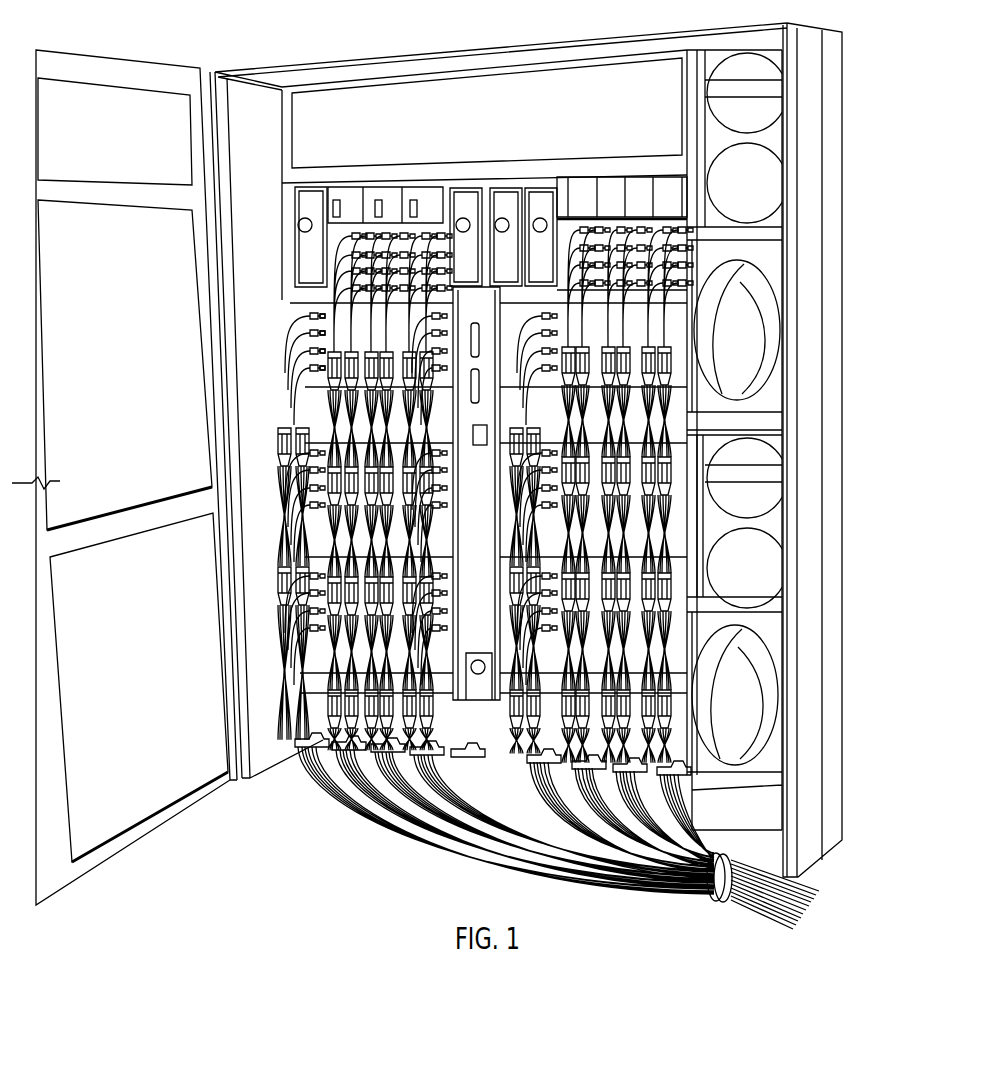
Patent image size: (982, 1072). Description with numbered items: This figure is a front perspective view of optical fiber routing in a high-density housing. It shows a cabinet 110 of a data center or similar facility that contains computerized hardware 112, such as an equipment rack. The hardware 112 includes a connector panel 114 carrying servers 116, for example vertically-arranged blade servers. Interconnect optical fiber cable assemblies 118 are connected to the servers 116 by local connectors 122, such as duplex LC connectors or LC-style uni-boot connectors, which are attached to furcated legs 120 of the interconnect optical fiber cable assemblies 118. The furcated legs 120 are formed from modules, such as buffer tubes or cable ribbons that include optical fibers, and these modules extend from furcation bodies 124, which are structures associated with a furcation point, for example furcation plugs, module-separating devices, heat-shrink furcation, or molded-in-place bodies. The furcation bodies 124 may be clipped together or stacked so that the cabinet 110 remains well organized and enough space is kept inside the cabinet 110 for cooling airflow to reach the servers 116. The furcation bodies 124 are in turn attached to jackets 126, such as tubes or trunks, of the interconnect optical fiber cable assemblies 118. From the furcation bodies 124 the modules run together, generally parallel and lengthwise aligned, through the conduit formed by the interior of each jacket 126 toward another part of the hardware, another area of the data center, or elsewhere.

The cabinet 110 is at (273, 836).
The computerized hardware 112 is at (430, 203).
The connector panel 114 is at (437, 245).
The servers 116 is at (623, 227).
The interconnect optical fiber cable assemblies 118 is at (283, 493).
The furcated legs 120 is at (292, 336).
The local connectors 122 is at (303, 311).
The furcation bodies 124 is at (320, 366).
The jackets 126 is at (324, 777).